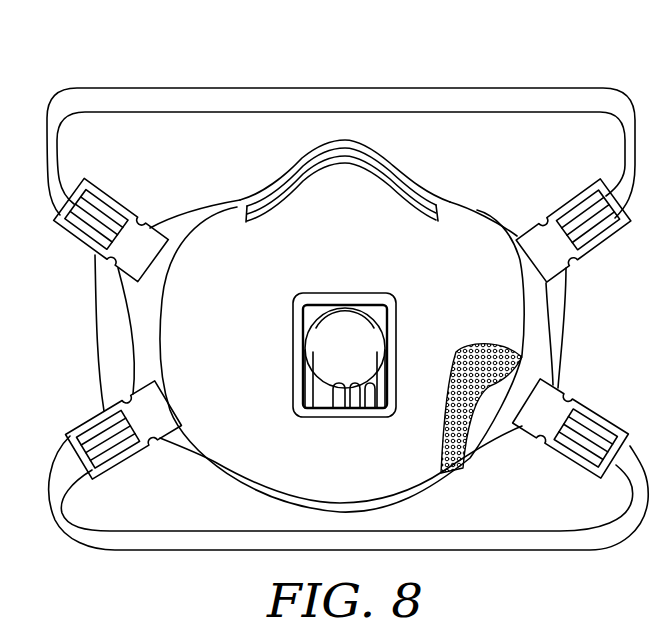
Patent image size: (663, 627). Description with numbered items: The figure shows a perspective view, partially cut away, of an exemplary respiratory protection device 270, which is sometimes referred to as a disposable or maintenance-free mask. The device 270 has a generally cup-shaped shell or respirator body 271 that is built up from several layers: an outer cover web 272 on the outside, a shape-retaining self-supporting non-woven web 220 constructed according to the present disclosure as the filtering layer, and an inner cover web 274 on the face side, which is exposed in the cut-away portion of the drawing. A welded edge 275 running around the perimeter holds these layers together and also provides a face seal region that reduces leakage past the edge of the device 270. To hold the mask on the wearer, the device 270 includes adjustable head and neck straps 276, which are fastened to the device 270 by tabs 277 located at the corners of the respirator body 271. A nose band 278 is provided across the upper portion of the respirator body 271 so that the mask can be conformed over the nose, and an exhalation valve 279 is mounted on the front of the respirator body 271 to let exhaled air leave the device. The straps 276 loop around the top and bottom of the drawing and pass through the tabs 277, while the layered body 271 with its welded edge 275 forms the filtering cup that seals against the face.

The respiratory protection device 270 is at (566, 46).
The respirator body 271 is at (224, 229).
The outer cover web 272 is at (244, 306).
The inner cover web 274 is at (487, 411).
The welded edge 275 is at (433, 486).
The adjustable head and neck straps 276 is at (165, 94).
The tabs 277 is at (99, 345).
The nose band 278 is at (425, 210).
The exhalation valve 279 is at (373, 347).
The shape-retaining self-supporting non-woven web 220 is at (521, 367).